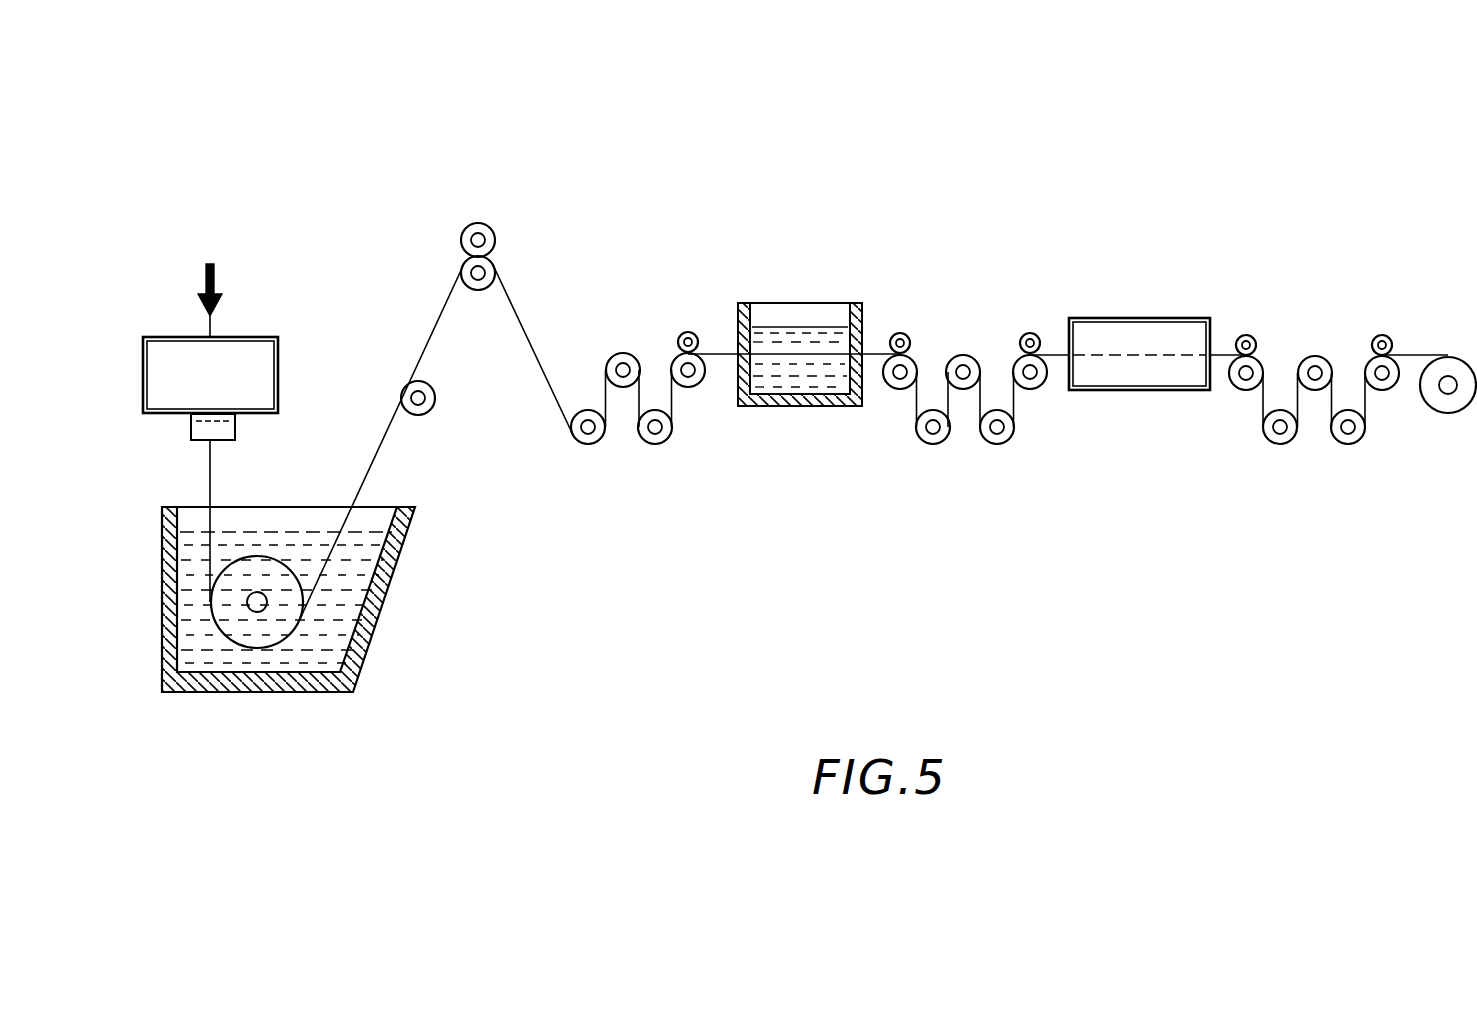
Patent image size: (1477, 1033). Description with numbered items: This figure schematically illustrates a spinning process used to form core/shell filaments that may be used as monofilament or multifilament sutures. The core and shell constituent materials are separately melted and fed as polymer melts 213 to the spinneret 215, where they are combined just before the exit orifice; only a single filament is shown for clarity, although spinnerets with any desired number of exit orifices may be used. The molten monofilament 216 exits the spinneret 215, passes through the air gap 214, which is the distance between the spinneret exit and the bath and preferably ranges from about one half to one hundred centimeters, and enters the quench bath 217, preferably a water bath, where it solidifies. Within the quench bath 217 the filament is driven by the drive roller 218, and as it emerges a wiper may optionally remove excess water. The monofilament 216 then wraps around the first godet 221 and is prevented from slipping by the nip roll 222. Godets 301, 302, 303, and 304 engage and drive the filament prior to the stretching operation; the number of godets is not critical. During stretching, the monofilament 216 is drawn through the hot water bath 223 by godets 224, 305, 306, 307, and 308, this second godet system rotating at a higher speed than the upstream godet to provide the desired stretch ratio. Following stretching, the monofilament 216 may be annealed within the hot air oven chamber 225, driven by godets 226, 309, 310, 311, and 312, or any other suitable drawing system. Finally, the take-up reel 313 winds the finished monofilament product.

The polymer melts 213 is at (212, 324).
The air gap 214 is at (264, 493).
The spinneret 215 is at (236, 428).
The monofilament 216 is at (208, 500).
The quench bath 217 is at (190, 693).
The drive roller 218 is at (266, 627).
The first godet 221 is at (478, 291).
The nip roll 222 is at (480, 222).
The hot water bath 223 is at (800, 407).
The godet 224 is at (893, 386).
The hot air oven chamber 225 is at (1140, 325).
The godet 226 is at (1240, 390).
The godet 301 is at (590, 445).
The godet 302 is at (623, 352).
The godet 303 is at (656, 445).
The godet 304 is at (691, 387).
The godet 305 is at (933, 445).
The godet 306 is at (965, 354).
The godet 307 is at (997, 445).
The godet 308 is at (1041, 385).
The godet 309 is at (1280, 445).
The godet 310 is at (1316, 355).
The godet 311 is at (1348, 445).
The godet 312 is at (1388, 390).
The take-up reel 313 is at (1447, 368).